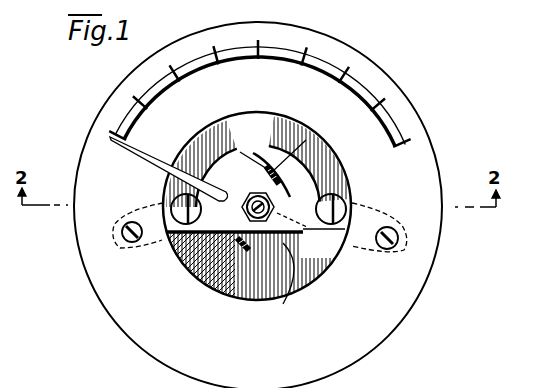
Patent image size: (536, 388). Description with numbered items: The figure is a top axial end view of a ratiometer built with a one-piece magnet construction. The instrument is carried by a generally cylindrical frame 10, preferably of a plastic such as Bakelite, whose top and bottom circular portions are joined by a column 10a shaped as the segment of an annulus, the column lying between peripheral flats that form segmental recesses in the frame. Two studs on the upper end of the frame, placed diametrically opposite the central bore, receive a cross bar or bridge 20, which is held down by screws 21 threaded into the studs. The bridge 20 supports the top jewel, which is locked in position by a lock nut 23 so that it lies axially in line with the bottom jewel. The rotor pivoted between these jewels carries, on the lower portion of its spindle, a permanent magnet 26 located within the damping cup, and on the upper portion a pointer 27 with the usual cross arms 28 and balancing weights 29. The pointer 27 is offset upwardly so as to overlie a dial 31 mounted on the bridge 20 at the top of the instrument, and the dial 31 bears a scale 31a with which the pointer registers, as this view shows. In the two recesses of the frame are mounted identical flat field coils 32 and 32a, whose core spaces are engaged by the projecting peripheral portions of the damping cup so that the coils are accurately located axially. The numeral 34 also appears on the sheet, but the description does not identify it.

The frame 10 is at (278, 286).
The column 10a is at (69, 384).
The cross bar or bridge 20 is at (213, 243).
The screws 21 is at (165, 200).
The lock nut 23 is at (227, 240).
The permanent magnet 26 is at (325, 277).
The pointer 27 is at (160, 164).
The cross arms 28 is at (281, 155).
The balancing weights 29 is at (305, 177).
The dial 31 is at (425, 132).
The scale 31a is at (392, 108).
The field coil 32 is at (205, 160).
The field coil 32a is at (330, 183).
The terminal 34 is at (499, 384).